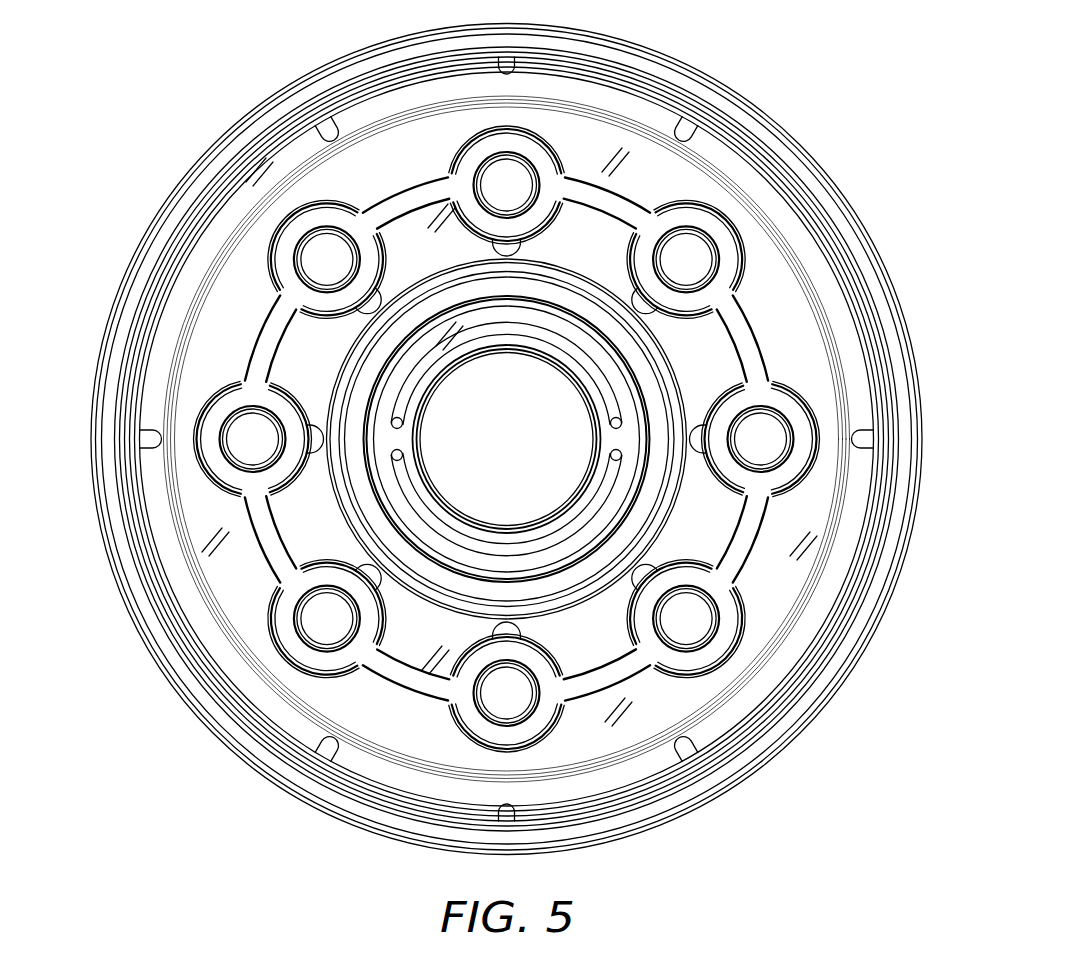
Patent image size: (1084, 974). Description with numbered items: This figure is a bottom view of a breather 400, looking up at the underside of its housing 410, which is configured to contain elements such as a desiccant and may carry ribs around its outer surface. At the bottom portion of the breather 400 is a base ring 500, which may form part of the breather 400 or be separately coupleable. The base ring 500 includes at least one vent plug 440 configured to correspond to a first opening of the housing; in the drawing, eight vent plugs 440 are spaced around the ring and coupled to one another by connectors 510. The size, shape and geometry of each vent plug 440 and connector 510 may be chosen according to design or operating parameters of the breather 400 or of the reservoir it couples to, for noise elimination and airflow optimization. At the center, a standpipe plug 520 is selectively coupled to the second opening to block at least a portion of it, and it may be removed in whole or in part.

The breather 400 is at (807, 775).
The housing 410 is at (662, 80).
The vent plug 440 is at (325, 616).
The base ring 500 is at (395, 726).
The connector 510 is at (277, 542).
The standpipe plug 520 is at (530, 410).